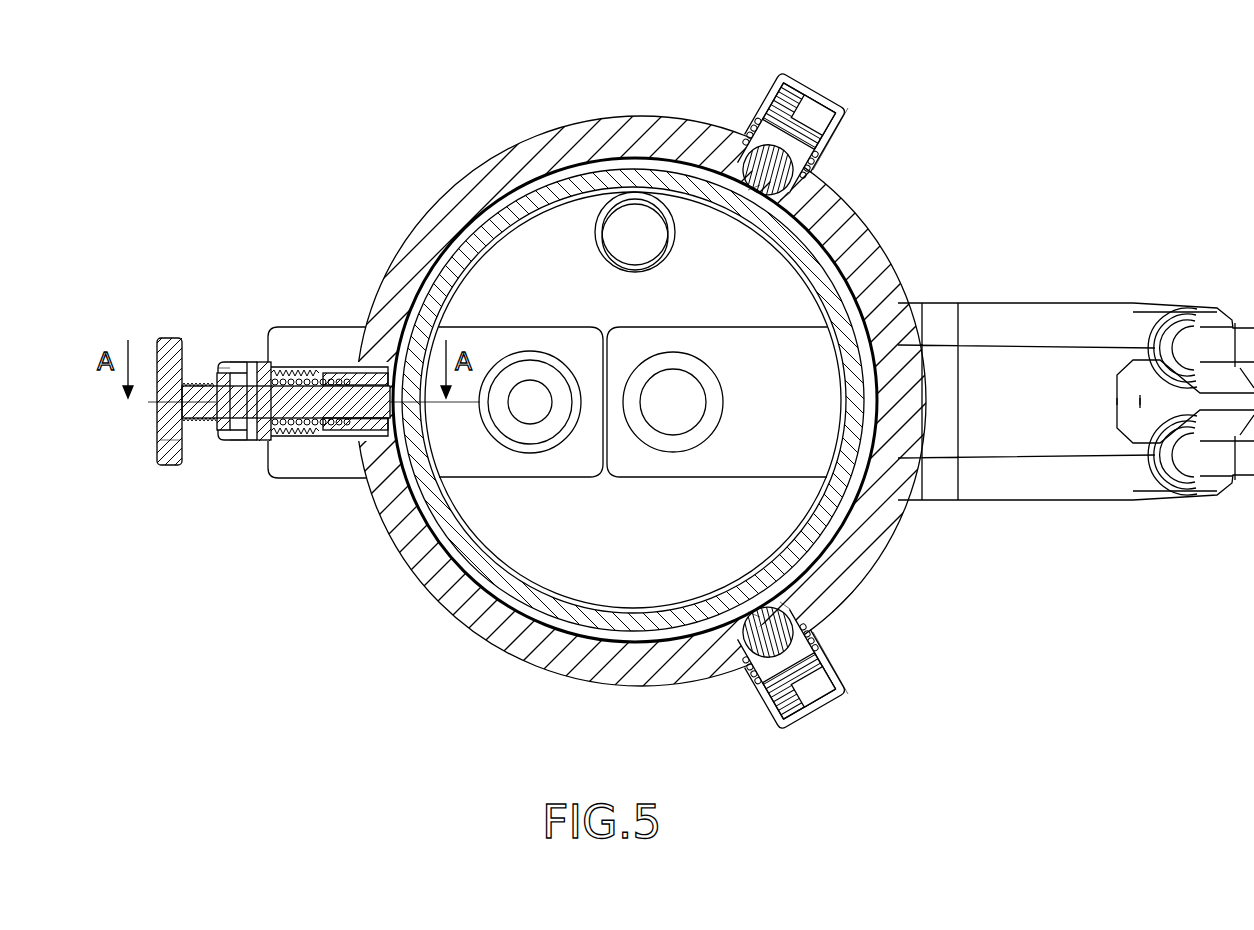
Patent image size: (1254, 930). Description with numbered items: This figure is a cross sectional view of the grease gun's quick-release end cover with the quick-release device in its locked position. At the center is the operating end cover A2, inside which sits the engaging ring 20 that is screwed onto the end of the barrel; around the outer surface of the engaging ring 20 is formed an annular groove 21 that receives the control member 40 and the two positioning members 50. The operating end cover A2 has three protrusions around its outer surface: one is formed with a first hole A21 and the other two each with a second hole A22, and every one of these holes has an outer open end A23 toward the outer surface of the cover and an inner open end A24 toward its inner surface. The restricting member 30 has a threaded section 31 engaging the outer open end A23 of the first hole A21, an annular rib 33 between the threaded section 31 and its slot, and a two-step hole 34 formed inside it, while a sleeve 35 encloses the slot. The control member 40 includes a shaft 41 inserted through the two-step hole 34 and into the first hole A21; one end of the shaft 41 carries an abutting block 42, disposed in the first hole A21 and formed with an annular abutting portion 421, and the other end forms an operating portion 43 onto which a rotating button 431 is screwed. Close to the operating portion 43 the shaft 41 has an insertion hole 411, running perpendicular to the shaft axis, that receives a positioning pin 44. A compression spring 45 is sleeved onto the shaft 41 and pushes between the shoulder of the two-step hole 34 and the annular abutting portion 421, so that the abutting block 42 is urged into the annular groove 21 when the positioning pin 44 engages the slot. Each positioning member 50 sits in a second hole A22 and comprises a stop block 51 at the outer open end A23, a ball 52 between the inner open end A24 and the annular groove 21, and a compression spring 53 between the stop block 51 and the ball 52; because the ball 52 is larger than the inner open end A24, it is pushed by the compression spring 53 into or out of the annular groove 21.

The engaging ring 20 is at (547, 185).
The annular groove 21 is at (450, 552).
The restricting member 30 is at (272, 348).
The threaded section 31 is at (290, 442).
The annular rib 33 is at (259, 442).
The two-step hole 34 is at (238, 363).
The sleeve 35 is at (219, 363).
The control member 40 is at (270, 398).
The shaft 41 is at (240, 432).
The abutting block 42 is at (392, 412).
The operating portion 43 is at (156, 412).
The positioning pin 44 is at (215, 432).
The compression spring 45 is at (298, 370).
The insertion hole 411 is at (197, 384).
The annular abutting portion 421 is at (337, 432).
The rotating button 431 is at (160, 450).
The positioning member 50 is at (809, 371).
The stop block 51 is at (800, 90).
The ball 52 is at (797, 387).
The compression spring 53 is at (770, 112).
The operating end cover A2 is at (432, 192).
The first hole A21 is at (349, 330).
The second hole A22 is at (790, 193).
The outer open end A23 is at (828, 95).
The inner open end A24 is at (757, 188).